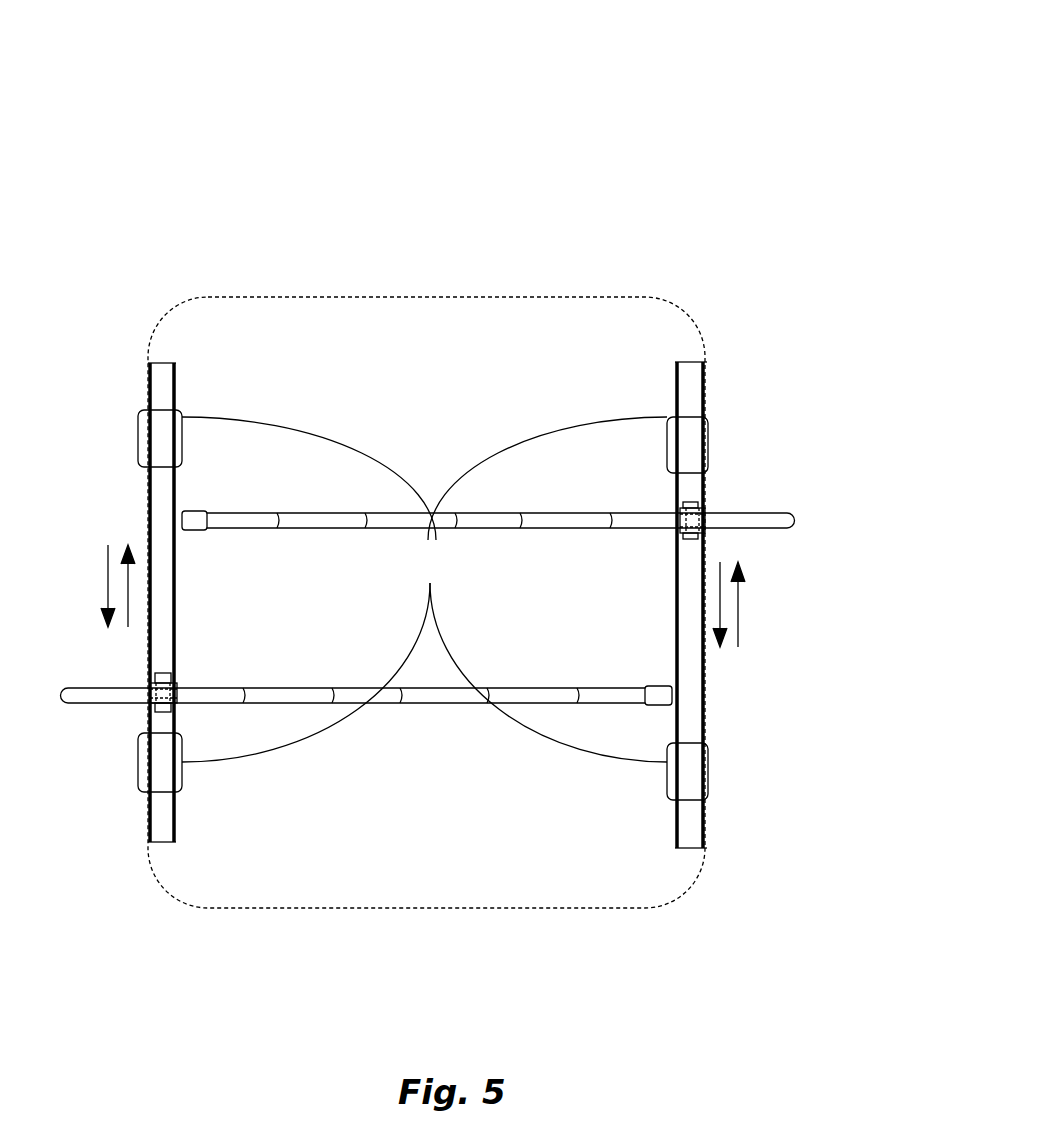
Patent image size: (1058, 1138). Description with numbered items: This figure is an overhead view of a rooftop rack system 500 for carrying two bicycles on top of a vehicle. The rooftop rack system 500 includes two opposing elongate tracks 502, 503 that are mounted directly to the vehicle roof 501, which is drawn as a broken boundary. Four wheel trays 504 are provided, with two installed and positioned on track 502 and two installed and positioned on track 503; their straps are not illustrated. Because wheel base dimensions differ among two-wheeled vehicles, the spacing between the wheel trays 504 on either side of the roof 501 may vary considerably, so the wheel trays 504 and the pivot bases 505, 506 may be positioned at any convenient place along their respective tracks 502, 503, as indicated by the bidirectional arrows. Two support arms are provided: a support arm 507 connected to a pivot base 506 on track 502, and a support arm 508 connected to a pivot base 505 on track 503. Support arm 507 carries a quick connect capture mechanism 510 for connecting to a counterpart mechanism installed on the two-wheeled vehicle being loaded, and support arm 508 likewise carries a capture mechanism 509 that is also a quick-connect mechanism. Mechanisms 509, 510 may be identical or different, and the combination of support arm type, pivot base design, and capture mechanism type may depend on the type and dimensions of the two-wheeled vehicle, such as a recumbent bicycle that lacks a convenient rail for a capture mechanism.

The rooftop rack system 500 is at (491, 170).
The vehicle roof 501 is at (410, 297).
The elongate track 502 is at (148, 502).
The elongate track 503 is at (675, 625).
The wheel trays 504 is at (424, 589).
The pivot base 505 is at (705, 512).
The pivot base 506 is at (177, 685).
The support arm 507 is at (455, 705).
The support arm 508 is at (228, 510).
The capture mechanism 509 is at (195, 530).
The quick connect capture mechanism 510 is at (655, 688).